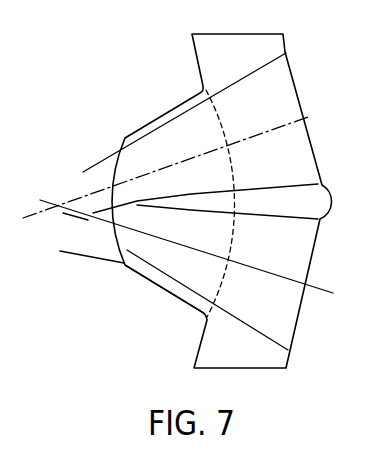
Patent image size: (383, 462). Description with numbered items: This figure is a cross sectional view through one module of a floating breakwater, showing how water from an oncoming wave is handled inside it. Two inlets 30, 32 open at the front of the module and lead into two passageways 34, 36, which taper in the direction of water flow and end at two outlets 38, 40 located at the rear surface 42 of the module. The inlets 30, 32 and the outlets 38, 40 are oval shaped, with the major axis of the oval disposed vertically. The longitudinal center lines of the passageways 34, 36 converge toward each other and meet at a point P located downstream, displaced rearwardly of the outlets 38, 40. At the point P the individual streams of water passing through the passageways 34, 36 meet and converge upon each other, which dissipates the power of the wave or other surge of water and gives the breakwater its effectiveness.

The inlet 30 is at (295, 69).
The inlet 32 is at (312, 267).
The passageway 34 is at (261, 305).
The passageway 36 is at (260, 118).
The outlet 38 is at (128, 163).
The outlet 40 is at (123, 253).
The rear surface 42 is at (122, 268).
The point P is at (53, 205).